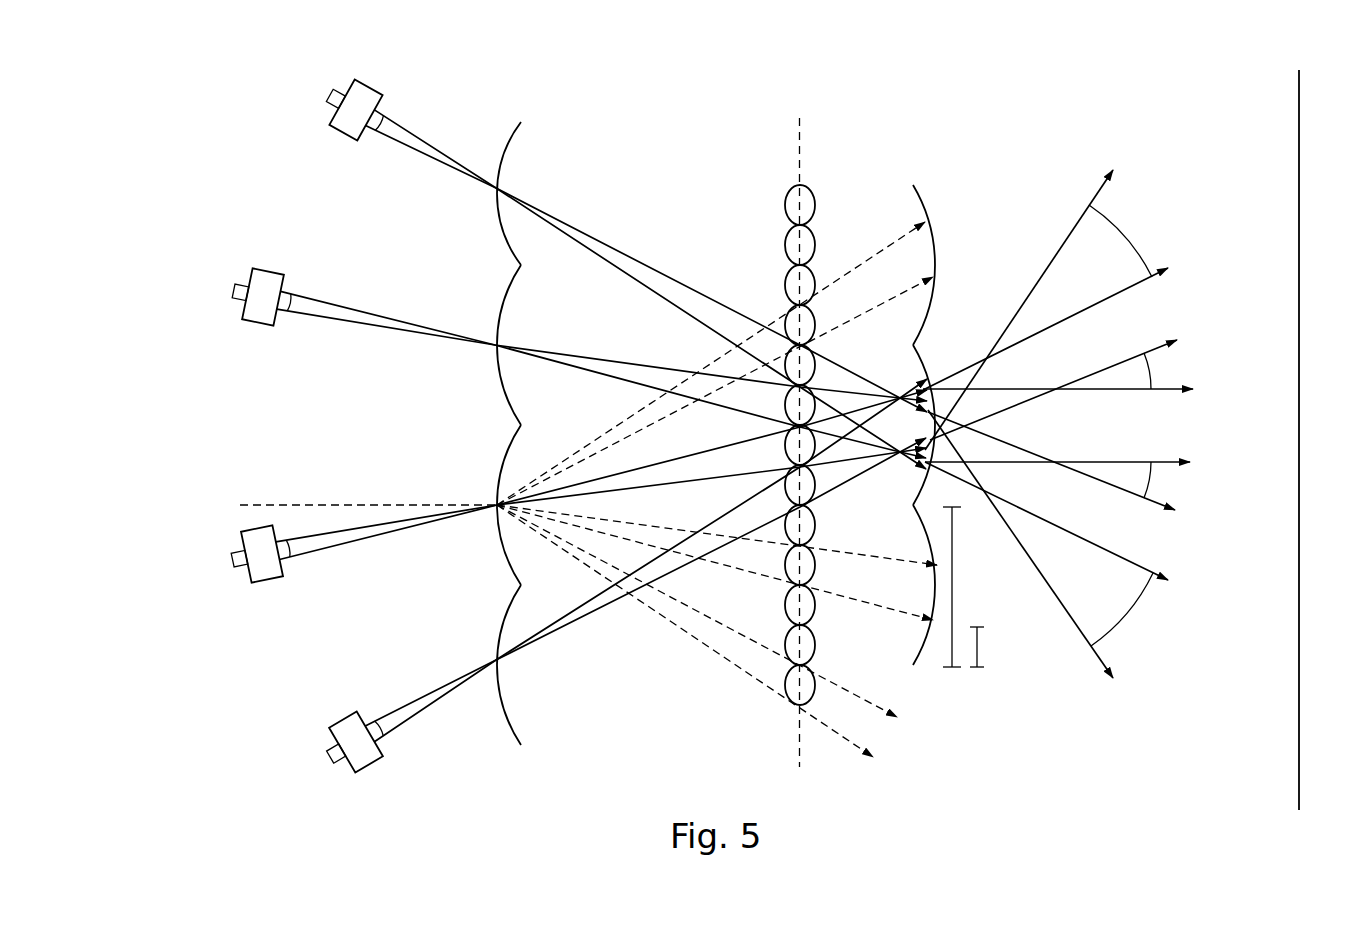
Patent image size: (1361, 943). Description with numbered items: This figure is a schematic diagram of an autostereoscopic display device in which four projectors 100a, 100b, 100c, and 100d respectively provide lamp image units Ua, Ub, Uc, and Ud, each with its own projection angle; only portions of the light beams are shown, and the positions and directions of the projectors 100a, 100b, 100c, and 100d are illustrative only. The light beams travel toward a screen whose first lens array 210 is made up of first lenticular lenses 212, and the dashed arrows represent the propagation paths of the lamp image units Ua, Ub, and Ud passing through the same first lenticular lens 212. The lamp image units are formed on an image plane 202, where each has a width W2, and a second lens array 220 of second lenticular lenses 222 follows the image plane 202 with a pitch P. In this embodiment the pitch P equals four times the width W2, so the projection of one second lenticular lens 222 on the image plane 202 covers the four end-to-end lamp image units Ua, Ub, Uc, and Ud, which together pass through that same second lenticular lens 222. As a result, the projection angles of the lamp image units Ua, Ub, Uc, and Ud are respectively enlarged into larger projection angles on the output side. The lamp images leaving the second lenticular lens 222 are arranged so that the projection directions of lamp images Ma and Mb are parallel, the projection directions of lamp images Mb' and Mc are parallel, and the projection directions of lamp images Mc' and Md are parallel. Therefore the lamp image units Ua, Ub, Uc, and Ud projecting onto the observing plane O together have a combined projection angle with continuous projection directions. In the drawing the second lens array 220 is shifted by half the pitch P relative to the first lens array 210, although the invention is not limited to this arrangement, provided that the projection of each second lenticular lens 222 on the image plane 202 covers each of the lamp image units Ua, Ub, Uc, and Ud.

The projector 100a is at (357, 88).
The projector 100b is at (257, 285).
The projector 100c is at (257, 545).
The projector 100d is at (347, 727).
The lamp image unit Ua is at (413, 130).
The lamp image unit Ub is at (338, 298).
The lamp image unit Uc is at (330, 525).
The lamp image unit Ud is at (405, 700).
The first lens array 210 is at (564, 386).
The first lenticular lens 212 is at (507, 152).
The image plane 202 is at (805, 167).
The second lens array 220 is at (977, 373).
The second lenticular lens 222 is at (917, 193).
The lamp image Ma is at (1120, 552).
The lamp image Mb is at (1056, 478).
The lamp image Mb' is at (1057, 443).
The lamp image Mc is at (1080, 410).
The lamp image Mc' is at (1053, 381).
The lamp image Md is at (1142, 288).
The pitch P is at (957, 587).
The width W2 is at (998, 647).
The observing plane O is at (1301, 117).